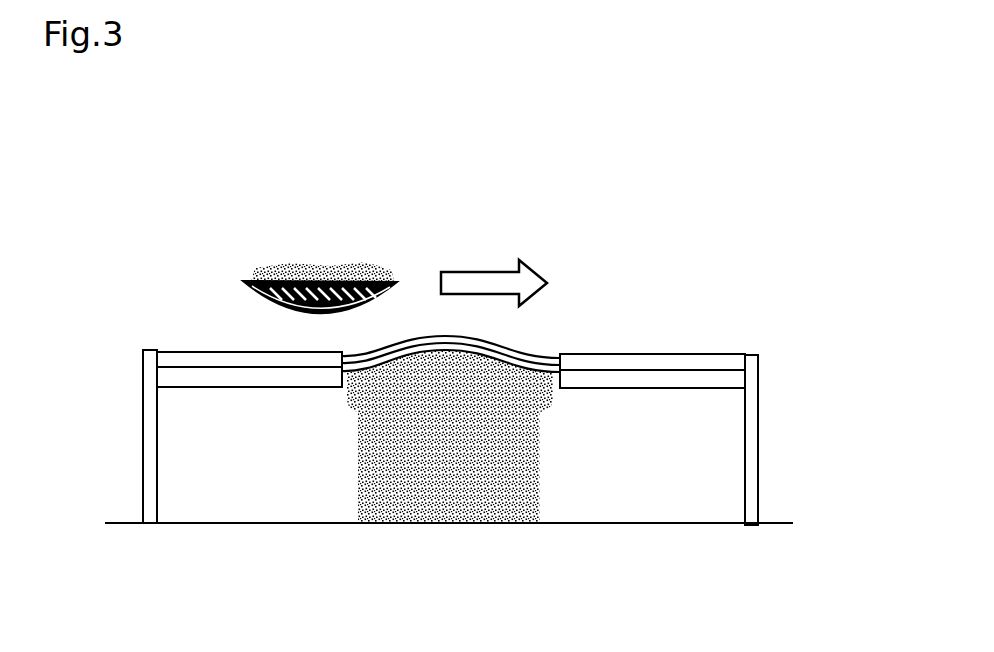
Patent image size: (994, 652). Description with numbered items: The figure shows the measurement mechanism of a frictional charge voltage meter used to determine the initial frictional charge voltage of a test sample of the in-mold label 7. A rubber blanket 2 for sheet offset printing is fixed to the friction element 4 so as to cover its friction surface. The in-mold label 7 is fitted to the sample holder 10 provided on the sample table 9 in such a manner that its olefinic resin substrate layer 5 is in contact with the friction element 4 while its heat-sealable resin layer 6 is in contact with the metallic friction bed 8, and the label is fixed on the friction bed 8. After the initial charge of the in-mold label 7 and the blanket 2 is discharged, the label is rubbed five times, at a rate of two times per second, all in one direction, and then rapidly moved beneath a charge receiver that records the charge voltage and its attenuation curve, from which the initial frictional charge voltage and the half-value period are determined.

The blanket for sheet offset printing 2 is at (399, 281).
The friction element 4 is at (312, 273).
The olefinic resin substrate layer 5 is at (513, 347).
The heat-sealable resin layer 6 is at (533, 362).
The in-mold label 7 is at (533, 300).
The friction bed 8 is at (483, 487).
The sample table 9 is at (727, 390).
The sample holder 10 is at (725, 363).